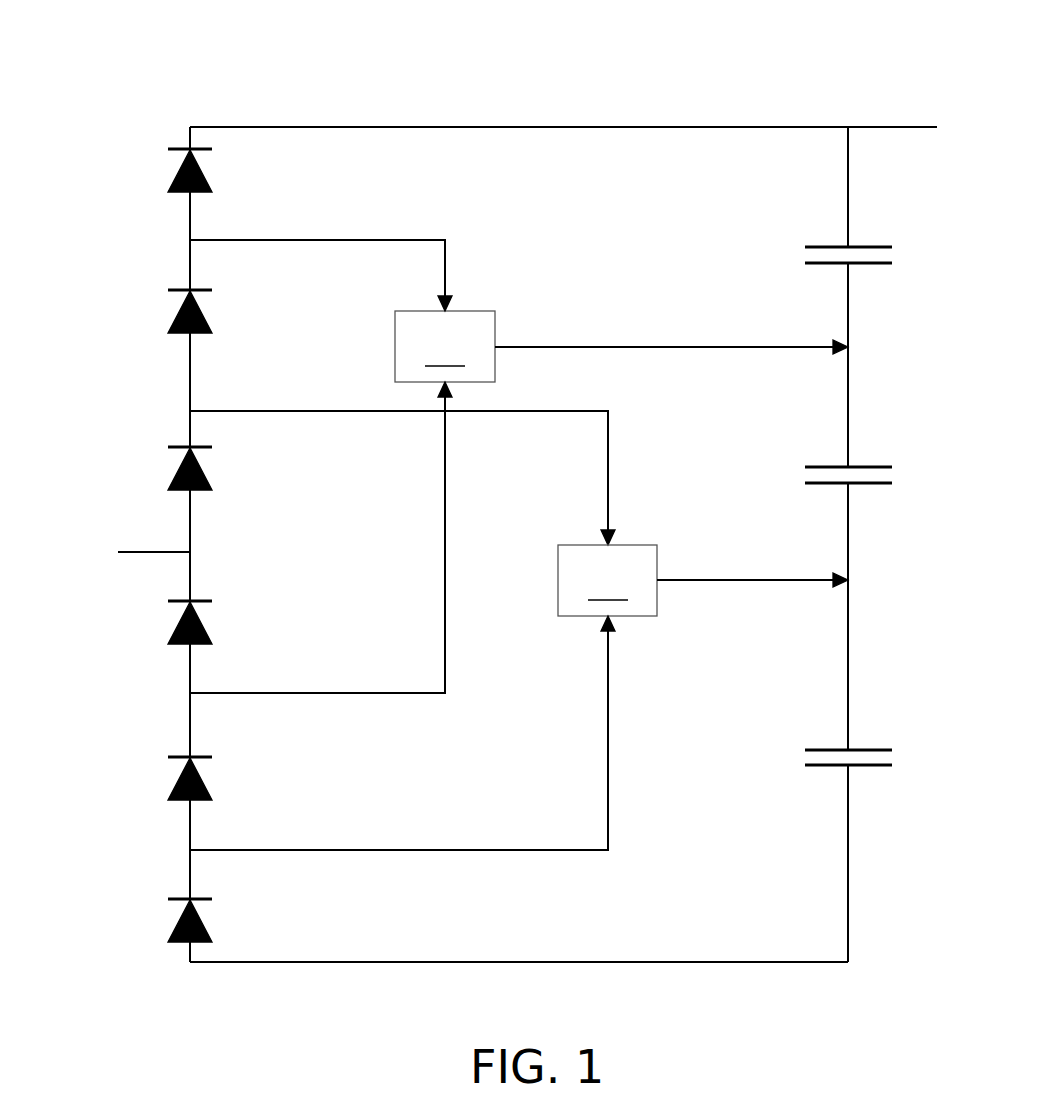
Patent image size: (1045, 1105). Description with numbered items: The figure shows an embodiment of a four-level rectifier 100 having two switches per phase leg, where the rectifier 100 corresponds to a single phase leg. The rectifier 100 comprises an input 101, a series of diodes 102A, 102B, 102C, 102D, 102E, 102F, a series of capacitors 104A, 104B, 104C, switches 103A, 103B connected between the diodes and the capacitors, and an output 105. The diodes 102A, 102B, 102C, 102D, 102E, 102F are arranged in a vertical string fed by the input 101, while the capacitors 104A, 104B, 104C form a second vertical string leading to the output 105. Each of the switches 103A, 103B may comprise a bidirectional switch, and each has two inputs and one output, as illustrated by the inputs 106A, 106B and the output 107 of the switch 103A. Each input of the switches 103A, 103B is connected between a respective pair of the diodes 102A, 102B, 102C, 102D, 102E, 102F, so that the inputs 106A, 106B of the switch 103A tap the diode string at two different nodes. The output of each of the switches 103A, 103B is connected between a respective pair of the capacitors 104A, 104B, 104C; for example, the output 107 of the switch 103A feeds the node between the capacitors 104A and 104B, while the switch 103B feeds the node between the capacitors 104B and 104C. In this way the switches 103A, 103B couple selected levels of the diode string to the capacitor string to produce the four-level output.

The 4-level rectifier 100 is at (171, 59).
The input 101 is at (111, 562).
The diode 102A is at (208, 172).
The diode 102B is at (208, 311).
The diode 102C is at (208, 468).
The diode 102D is at (208, 622).
The diode 102E is at (208, 781).
The diode 102F is at (208, 920).
The switch 103A is at (445, 346).
The switch 103B is at (519, 697).
The capacitor 104A is at (812, 255).
The capacitor 104B is at (812, 475).
The capacitor 104C is at (812, 757).
The output 105 is at (970, 138).
The switch input 106A is at (450, 309).
The switch input 106B is at (450, 383).
The switch output 107 is at (495, 347).